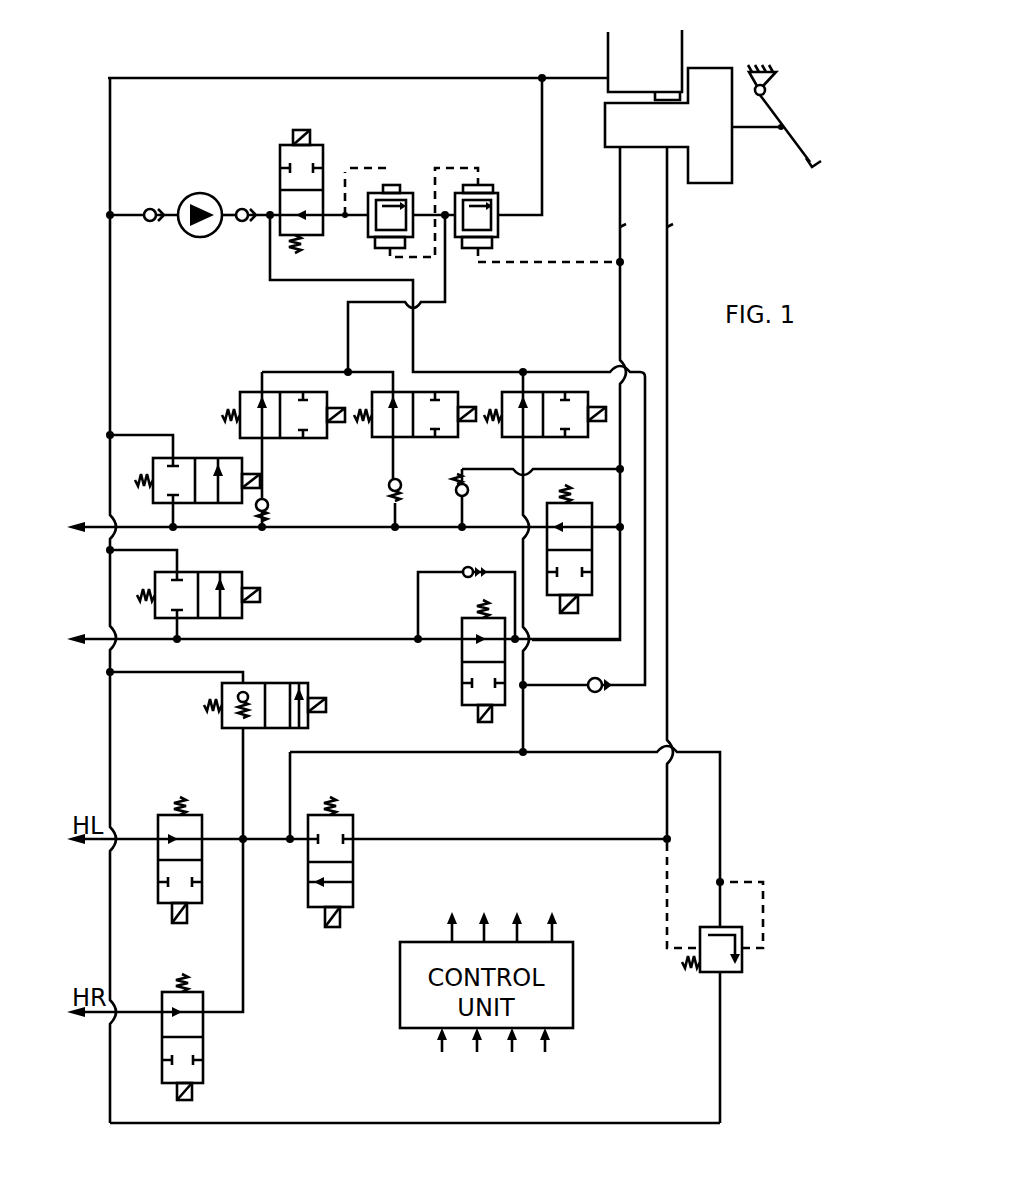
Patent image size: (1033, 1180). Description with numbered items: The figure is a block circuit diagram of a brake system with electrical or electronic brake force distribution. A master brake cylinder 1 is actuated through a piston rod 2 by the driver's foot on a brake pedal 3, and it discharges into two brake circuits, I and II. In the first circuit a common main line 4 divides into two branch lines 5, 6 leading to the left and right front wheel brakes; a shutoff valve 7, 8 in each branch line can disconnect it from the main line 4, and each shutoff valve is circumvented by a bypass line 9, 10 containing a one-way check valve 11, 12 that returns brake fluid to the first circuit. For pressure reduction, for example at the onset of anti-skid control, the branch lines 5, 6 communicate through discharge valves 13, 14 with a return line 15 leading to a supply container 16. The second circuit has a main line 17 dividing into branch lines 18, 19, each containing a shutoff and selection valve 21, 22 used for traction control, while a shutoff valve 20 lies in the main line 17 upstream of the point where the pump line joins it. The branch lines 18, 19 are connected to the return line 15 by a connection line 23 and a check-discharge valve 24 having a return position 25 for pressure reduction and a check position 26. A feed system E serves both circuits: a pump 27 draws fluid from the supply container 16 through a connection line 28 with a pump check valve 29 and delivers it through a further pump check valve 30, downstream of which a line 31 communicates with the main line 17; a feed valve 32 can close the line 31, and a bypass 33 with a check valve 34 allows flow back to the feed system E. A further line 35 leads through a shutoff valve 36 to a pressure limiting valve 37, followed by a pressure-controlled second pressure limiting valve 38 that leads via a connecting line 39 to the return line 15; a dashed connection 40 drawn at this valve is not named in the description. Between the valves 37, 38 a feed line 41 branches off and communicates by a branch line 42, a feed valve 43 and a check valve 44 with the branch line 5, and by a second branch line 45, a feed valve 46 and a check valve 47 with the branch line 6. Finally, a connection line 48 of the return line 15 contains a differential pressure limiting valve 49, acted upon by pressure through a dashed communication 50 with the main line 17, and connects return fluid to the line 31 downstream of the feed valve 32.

The master brake cylinder 1 is at (727, 183).
The piston rod 2 is at (760, 133).
The brake pedal 3 is at (786, 133).
The main line 4 is at (615, 305).
The branch line 5 is at (333, 527).
The branch line 6 is at (318, 637).
The shutoff valve 7 is at (595, 553).
The shutoff valve 8 is at (462, 680).
The bypass line 9 is at (503, 473).
The bypass line 10 is at (428, 580).
The one-way check valve 11 is at (465, 503).
The one-way check valve 12 is at (462, 567).
The discharge valve 13 is at (202, 457).
The discharge valve 14 is at (230, 572).
The return line 15 is at (110, 366).
The supply container 16 is at (607, 52).
The main line 17 is at (670, 676).
The branch line 18 is at (248, 940).
The branch line 19 is at (220, 835).
The shutoff valve 20 is at (356, 888).
The shutoff and selection valve 21 is at (206, 1046).
The shutoff and selection valve 22 is at (204, 869).
The connection line 23 is at (243, 763).
The check-discharge valve 24 is at (311, 681).
The return position 25 is at (315, 728).
The check position 26 is at (250, 690).
The pump 27 is at (190, 193).
The connection line 28 is at (122, 213).
The pump check valve 29 is at (150, 221).
The pump one-way check valve 30 is at (242, 207).
The line 31 is at (317, 280).
The feed valve 32 is at (548, 438).
The bypass 33 is at (650, 478).
The check valve 34 is at (603, 697).
The line 35 is at (356, 185).
The shutoff valve 36 is at (324, 150).
The pressure limiting valve 37 is at (392, 189).
The second pressure limiting valve 38 is at (495, 190).
The connecting line 39 is at (543, 199).
The control line 40 is at (538, 264).
The feed line 41 is at (447, 290).
The branch line 42 is at (268, 472).
The feed valve 43 is at (253, 390).
The check valve 44 is at (270, 508).
The second branch line 45 is at (391, 461).
The feed valve 46 is at (433, 437).
The check valve 47 is at (398, 472).
The connection line 48 is at (403, 1122).
The differential pressure limiting valve 49 is at (712, 972).
The communication 50 is at (668, 893).
The feed system E is at (452, 151).